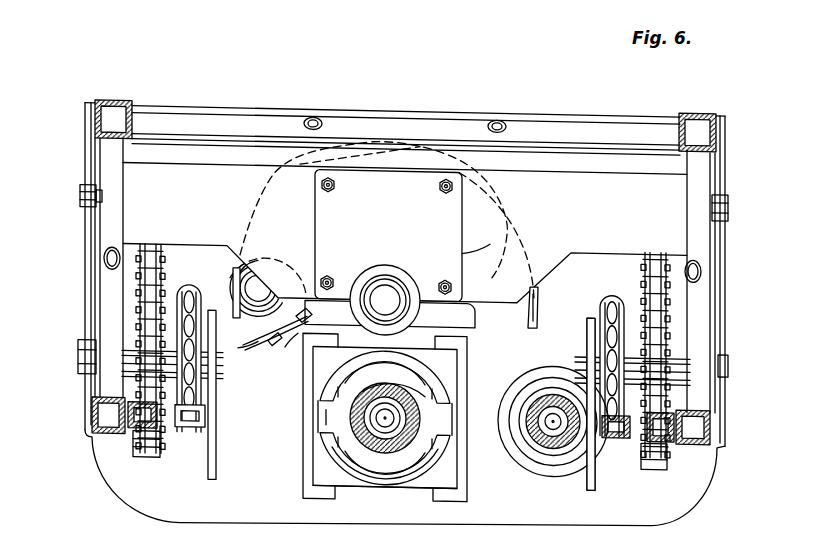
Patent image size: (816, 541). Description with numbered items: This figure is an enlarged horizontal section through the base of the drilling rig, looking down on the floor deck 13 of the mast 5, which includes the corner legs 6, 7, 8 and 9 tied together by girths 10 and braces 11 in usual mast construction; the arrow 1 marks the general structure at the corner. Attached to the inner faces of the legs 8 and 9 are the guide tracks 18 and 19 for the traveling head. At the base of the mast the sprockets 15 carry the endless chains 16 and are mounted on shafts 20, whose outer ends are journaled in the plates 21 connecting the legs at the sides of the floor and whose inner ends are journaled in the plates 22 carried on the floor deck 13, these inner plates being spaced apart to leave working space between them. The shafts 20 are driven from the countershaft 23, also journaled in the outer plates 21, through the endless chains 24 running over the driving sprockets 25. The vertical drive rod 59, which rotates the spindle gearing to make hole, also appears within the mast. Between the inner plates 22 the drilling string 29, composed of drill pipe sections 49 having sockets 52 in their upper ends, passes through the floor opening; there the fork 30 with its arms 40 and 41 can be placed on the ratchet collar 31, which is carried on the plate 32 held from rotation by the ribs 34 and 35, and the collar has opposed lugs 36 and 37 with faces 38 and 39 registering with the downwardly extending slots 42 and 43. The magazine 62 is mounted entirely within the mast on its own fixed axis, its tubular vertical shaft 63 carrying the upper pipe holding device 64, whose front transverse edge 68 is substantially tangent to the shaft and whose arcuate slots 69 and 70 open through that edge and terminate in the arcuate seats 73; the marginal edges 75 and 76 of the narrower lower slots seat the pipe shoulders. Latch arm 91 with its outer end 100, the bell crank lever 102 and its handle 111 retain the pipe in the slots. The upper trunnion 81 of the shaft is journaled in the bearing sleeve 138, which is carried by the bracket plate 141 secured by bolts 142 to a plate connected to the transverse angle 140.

The machine frame 1 is at (716, 100).
The mast 5 is at (320, 113).
The corner leg 6 is at (107, 102).
The corner leg 7 is at (680, 104).
The corner leg 8 is at (93, 440).
The corner leg 9 is at (711, 440).
The girths 10 is at (440, 112).
The braces 11 is at (563, 112).
The floor deck 13 is at (140, 498).
The sprockets 15 is at (198, 386).
The endless chains 16 is at (206, 414).
The guide track 18 is at (138, 430).
The guide track 19 is at (660, 431).
The shafts 20 is at (122, 335).
The plates 21 is at (85, 302).
The plates 22 is at (216, 446).
The countershaft 23 is at (80, 190).
The endless chains 24 is at (162, 276).
The driving sprockets 25 is at (150, 456).
The drilling string 29 is at (393, 455).
The fork 30 is at (320, 455).
The ratchet collar 31 is at (358, 472).
The plate 32 is at (320, 476).
The rib 34 is at (325, 486).
The rib 35 is at (468, 488).
The lug 36 is at (335, 440).
The lug 37 is at (440, 392).
The face 38 is at (326, 415).
The face 39 is at (445, 405).
The arm 40 is at (330, 410).
The arm 41 is at (450, 418).
The slot 42 is at (325, 398).
The slot 43 is at (452, 436).
The drill pipe sections 49 is at (248, 278).
The sockets 52 is at (268, 285).
The drive rod 59 is at (553, 440).
The magazine 62 is at (538, 293).
The vertical shaft 63 is at (398, 284).
The upper pipe holding device 64 is at (539, 300).
The front transverse edges 68 is at (460, 320).
The arcuate slot 69 is at (247, 226).
The arcuate slot 70 is at (536, 244).
The arcuate seats 73 is at (478, 168).
The marginal edge 75 is at (235, 300).
The marginal edge 76 is at (303, 317).
The trunnion 81 is at (374, 280).
The pivoted arm 91 is at (273, 338).
The outer ends 100 is at (292, 343).
The bell crank lever 102 is at (246, 346).
The handles 111 is at (262, 332).
The bearing sleeve 138 is at (385, 262).
The transverse angle 140 is at (205, 170).
The bracket plate 141 is at (405, 160).
The bolts 142 is at (333, 188).